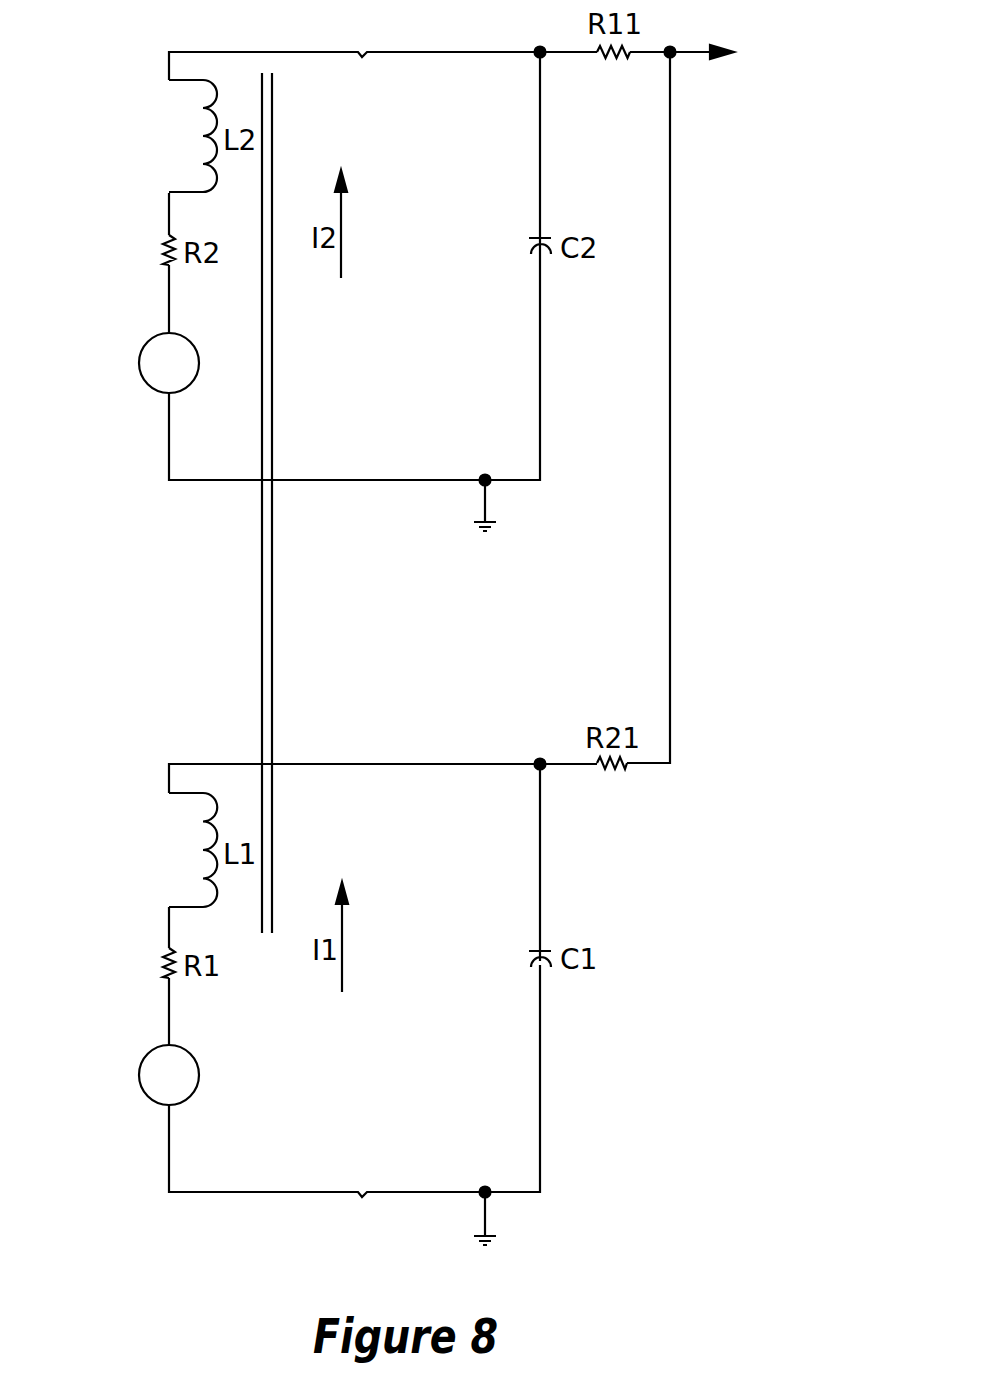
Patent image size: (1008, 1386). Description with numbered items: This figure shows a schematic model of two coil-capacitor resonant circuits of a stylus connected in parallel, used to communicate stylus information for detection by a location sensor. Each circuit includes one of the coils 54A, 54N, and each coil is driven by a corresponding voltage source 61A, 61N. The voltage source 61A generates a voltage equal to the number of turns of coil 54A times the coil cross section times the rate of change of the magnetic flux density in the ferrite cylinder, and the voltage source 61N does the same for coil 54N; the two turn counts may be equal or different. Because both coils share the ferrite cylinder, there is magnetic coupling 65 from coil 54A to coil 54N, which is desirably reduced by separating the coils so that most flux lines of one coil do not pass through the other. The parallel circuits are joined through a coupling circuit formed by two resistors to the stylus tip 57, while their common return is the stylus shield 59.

The coil 54N is at (213, 152).
The coil 54A is at (210, 865).
The voltage source 61N is at (139, 365).
The voltage source 61A is at (139, 1077).
The magnetic coupling 65 is at (262, 615).
The stylus tip 57 is at (722, 52).
The stylus shield 59 is at (487, 1236).